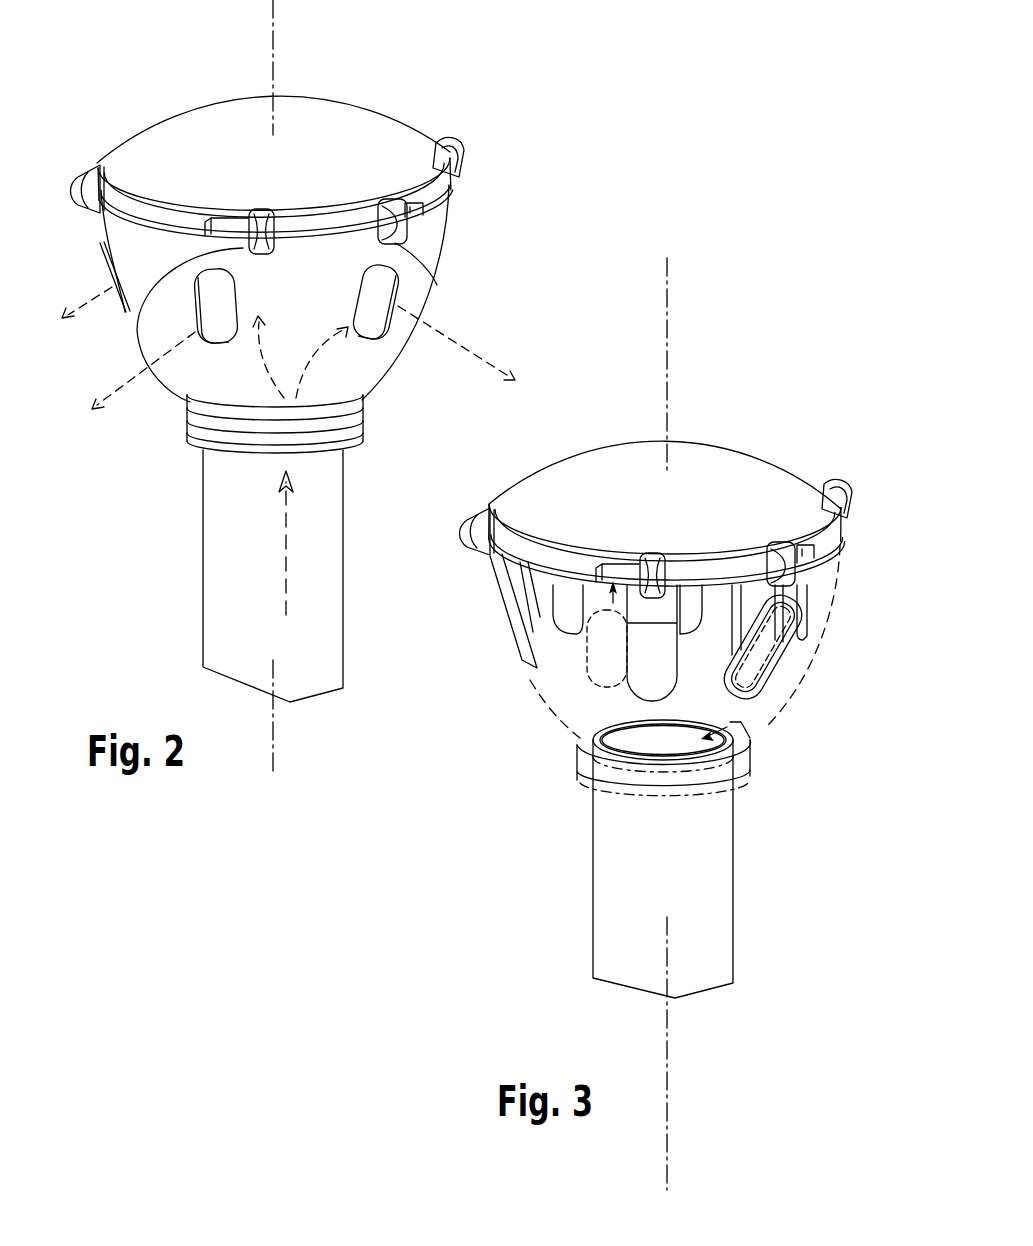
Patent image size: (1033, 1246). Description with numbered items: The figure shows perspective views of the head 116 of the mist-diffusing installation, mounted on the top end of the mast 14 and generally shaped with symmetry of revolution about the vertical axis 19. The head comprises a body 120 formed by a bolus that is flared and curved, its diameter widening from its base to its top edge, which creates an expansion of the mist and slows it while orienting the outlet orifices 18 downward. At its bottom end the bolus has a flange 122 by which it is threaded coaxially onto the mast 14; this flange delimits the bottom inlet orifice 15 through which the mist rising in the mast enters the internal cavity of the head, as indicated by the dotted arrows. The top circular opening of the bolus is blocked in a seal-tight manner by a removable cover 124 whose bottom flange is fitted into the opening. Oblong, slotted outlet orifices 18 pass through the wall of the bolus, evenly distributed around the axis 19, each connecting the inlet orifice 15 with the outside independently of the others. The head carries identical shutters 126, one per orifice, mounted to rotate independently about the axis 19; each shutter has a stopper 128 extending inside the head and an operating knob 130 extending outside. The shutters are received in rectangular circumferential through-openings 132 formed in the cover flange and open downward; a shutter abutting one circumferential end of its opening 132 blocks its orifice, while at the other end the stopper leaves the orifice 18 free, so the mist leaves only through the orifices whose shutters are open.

In FIG. 2, the mast 14 is at (345, 585).
In FIG. 3, the mast 14 is at (737, 901).
In FIG. 3, the inlet orifice 15 is at (750, 727).
In FIG. 2, the outlet orifices 18 is at (117, 302).
In FIG. 3, the outlet orifices 18 is at (601, 680).
In FIG. 2, the axis 19 is at (273, 51).
In FIG. 3, the axis 19 is at (667, 345).
In FIG. 2, the head 116 is at (484, 166).
In FIG. 3, the head 116 is at (711, 432).
In FIG. 2, the body 120 is at (437, 273).
In FIG. 2, the flange 122 is at (363, 418).
In FIG. 2, the cover 124 is at (350, 125).
In FIG. 3, the cover 124 is at (764, 466).
In FIG. 2, the shutters 126 is at (78, 172).
In FIG. 3, the shutters 126 is at (467, 550).
In FIG. 3, the stopper 128 is at (668, 694).
In FIG. 2, the operating knob 130 is at (88, 196).
In FIG. 3, the operating knob 130 is at (846, 497).
In FIG. 2, the through-openings 132 is at (152, 334).
In FIG. 3, the through-openings 132 is at (605, 640).